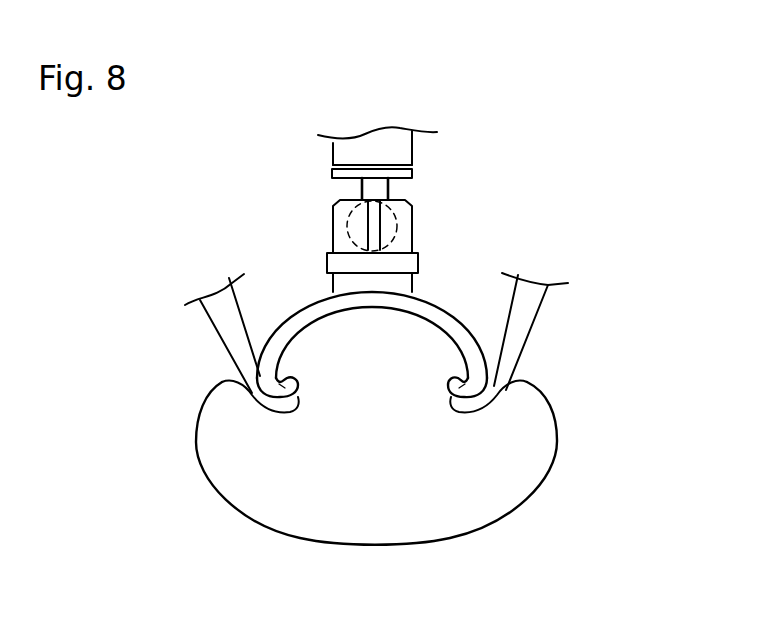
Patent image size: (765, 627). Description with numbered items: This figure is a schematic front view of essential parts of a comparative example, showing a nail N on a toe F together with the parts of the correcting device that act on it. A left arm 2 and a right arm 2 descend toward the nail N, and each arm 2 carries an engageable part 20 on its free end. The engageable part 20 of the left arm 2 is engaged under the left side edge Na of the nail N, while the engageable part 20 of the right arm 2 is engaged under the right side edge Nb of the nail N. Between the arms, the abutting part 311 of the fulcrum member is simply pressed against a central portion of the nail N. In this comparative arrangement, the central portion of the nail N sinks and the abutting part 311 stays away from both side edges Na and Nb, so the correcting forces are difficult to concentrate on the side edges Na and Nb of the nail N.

The abutting part 311 is at (395, 285).
The nail N is at (377, 308).
The left side edge Na is at (260, 401).
The right side edge Nb is at (497, 390).
The arm 2 is at (212, 324).
The engageable part 20 is at (300, 408).
The toe F is at (395, 480).